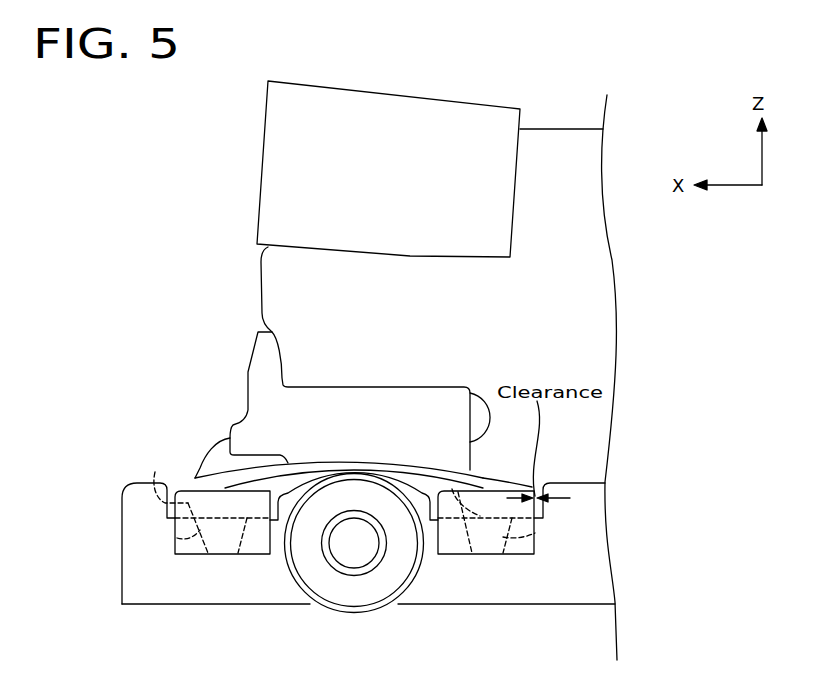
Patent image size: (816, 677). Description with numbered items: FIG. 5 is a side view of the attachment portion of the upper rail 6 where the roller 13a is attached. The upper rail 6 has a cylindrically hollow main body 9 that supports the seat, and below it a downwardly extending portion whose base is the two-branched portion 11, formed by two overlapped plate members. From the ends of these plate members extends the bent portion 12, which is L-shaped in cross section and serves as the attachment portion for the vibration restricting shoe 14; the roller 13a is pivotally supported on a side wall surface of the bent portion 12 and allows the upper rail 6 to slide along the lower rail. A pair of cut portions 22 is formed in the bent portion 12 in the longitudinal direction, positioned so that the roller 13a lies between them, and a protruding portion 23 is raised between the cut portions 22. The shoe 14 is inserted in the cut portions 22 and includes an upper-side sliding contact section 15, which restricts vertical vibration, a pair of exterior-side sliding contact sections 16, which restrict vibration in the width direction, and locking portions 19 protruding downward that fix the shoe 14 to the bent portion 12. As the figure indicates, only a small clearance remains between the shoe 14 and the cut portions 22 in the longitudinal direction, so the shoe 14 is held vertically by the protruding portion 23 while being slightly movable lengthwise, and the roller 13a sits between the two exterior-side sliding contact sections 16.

The upper rail 6 is at (548, 128).
The main body 9 is at (587, 146).
The two-branched portion 11 is at (268, 279).
The bent portion 12 is at (121, 524).
The roller 13a is at (410, 590).
The shoe 14 is at (513, 486).
The upper-side sliding contact section 15 is at (352, 463).
The exterior-side sliding contact section 16 is at (255, 546).
The locking portion 19 is at (176, 538).
The cut portion 22 is at (452, 489).
The protruding portion 23 is at (405, 472).